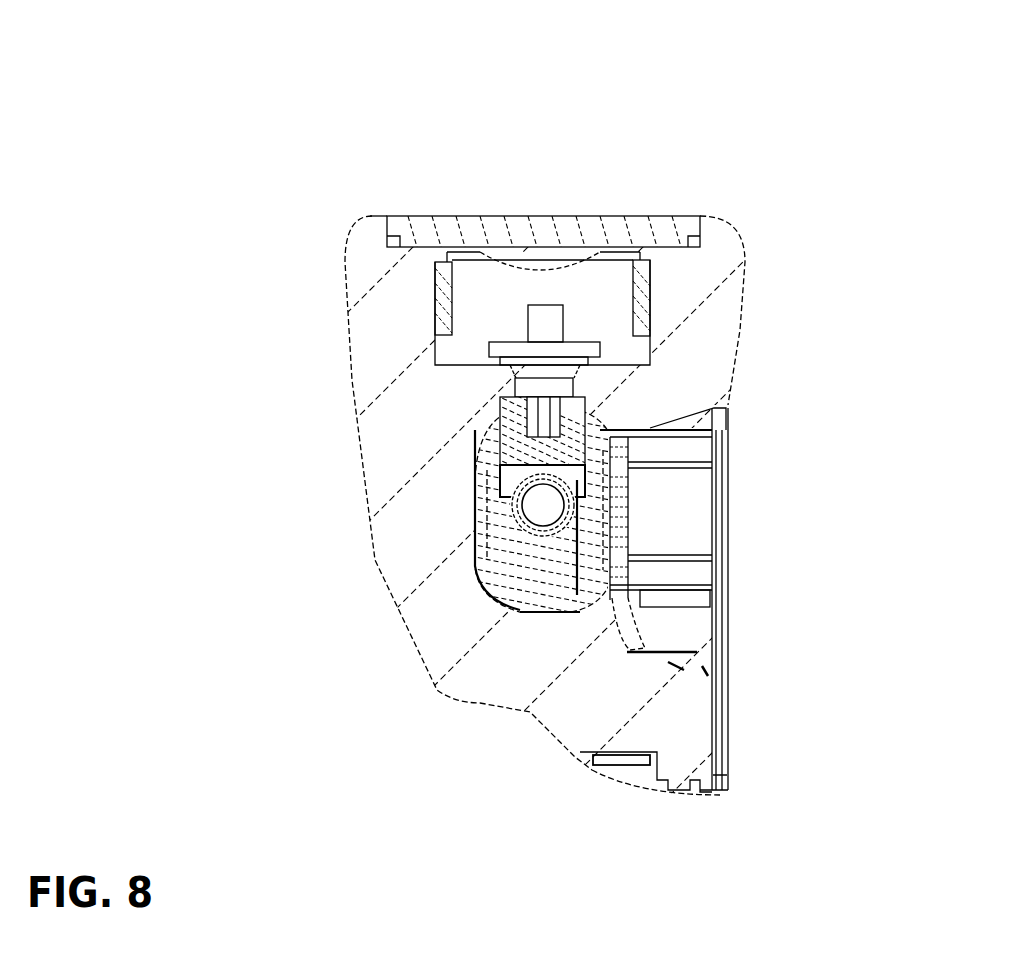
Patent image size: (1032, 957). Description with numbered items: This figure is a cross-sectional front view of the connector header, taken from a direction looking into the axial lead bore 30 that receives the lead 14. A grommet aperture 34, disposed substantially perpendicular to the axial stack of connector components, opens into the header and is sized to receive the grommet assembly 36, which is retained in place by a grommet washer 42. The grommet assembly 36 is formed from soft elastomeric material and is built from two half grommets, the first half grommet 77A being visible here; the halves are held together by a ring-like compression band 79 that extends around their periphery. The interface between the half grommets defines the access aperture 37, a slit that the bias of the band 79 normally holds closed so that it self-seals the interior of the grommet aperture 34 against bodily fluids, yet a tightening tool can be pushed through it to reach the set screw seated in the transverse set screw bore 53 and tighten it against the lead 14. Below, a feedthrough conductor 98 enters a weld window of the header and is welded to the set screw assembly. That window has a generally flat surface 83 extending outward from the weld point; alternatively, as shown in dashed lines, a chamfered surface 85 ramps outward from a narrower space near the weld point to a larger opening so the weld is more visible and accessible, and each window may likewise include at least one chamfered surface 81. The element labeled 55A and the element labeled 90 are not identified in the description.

The lead 14 is at (478, 532).
The axial lead bore 30 is at (540, 505).
The grommet aperture 34 is at (575, 150).
The grommet assembly 36 is at (587, 213).
The access aperture 37 is at (540, 267).
The grommet washer 42 is at (670, 210).
The set screw bore 53 is at (577, 595).
The side wall 55A is at (752, 560).
The first half grommet 77A is at (492, 268).
The compression band 79 is at (443, 283).
The chamfered surface 81 is at (462, 405).
The flat surface 83 is at (693, 652).
The chamfered surface 85 is at (683, 665).
The shaft 90 is at (545, 397).
The feedthrough conductor 98 is at (623, 543).